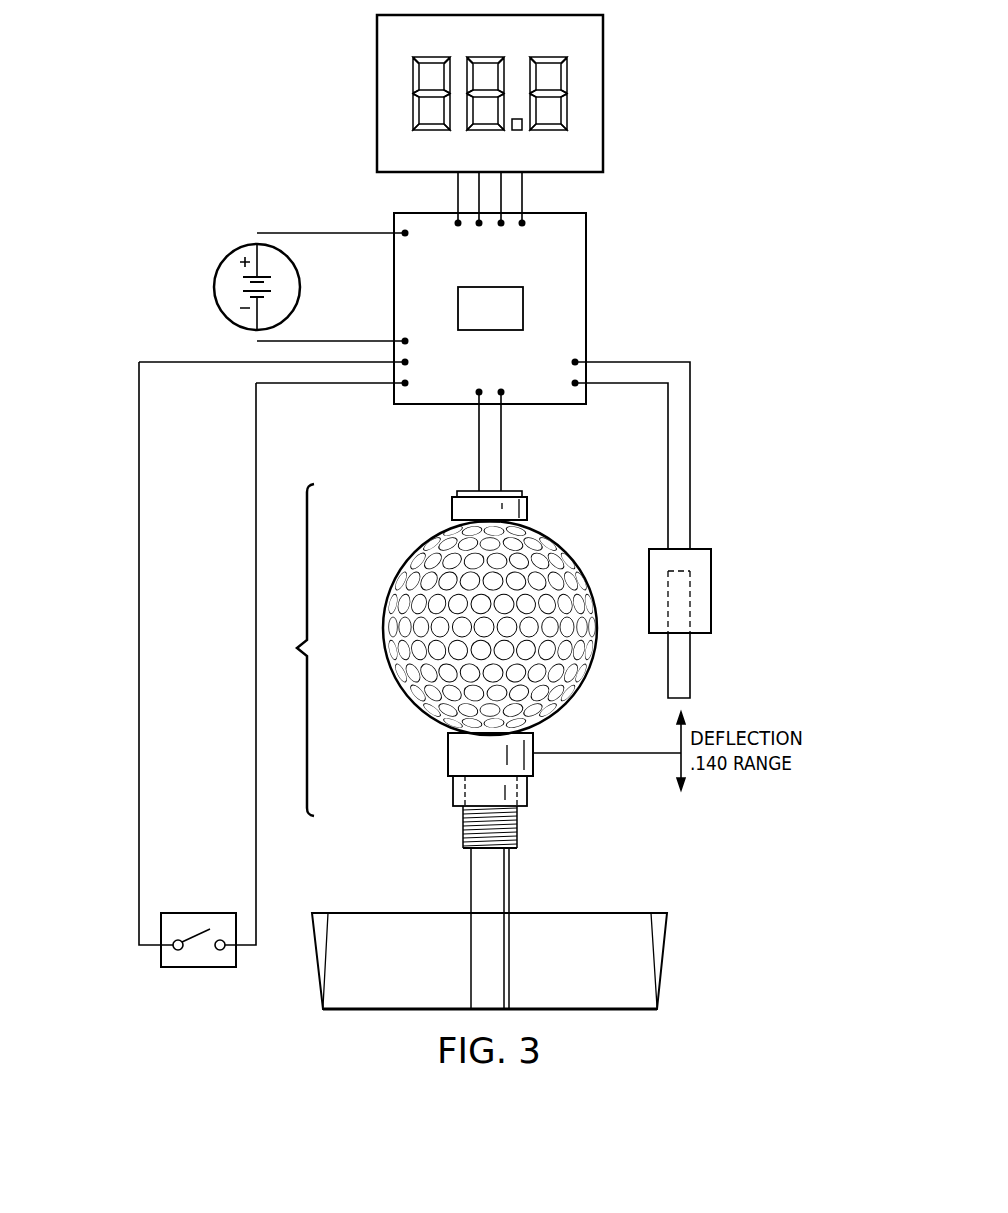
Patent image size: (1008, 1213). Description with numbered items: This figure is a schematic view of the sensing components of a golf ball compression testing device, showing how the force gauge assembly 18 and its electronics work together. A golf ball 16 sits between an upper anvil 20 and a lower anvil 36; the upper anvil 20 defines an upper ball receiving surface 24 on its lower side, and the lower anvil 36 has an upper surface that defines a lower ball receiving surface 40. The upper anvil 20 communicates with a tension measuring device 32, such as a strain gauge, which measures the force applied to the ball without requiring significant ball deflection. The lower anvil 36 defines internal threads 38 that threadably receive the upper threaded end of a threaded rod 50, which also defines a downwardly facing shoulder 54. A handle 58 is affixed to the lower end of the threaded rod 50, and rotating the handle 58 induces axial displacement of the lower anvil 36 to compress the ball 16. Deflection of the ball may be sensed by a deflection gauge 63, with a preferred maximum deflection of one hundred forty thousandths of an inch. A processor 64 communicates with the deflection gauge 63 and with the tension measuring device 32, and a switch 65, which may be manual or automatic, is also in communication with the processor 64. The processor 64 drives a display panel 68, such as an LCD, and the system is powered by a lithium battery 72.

The golf ball 16 is at (383, 626).
The force gauge assembly 18 is at (290, 650).
The upper anvil 20 is at (452, 518).
The upper ball receiving surface 24 is at (488, 523).
The tension measuring device 32 is at (527, 506).
The lower anvil 36 is at (448, 752).
The internal threads 38 is at (531, 805).
The lower ball receiving surface 40 is at (489, 733).
The threaded rod 50 is at (510, 862).
The downwardly facing shoulder 54 is at (465, 853).
The handle 58 is at (665, 958).
The deflection gauge 63 is at (712, 590).
The processor 64 is at (587, 306).
The switch 65 is at (198, 968).
The display panel 68 is at (377, 93).
The lithium battery 72 is at (214, 290).